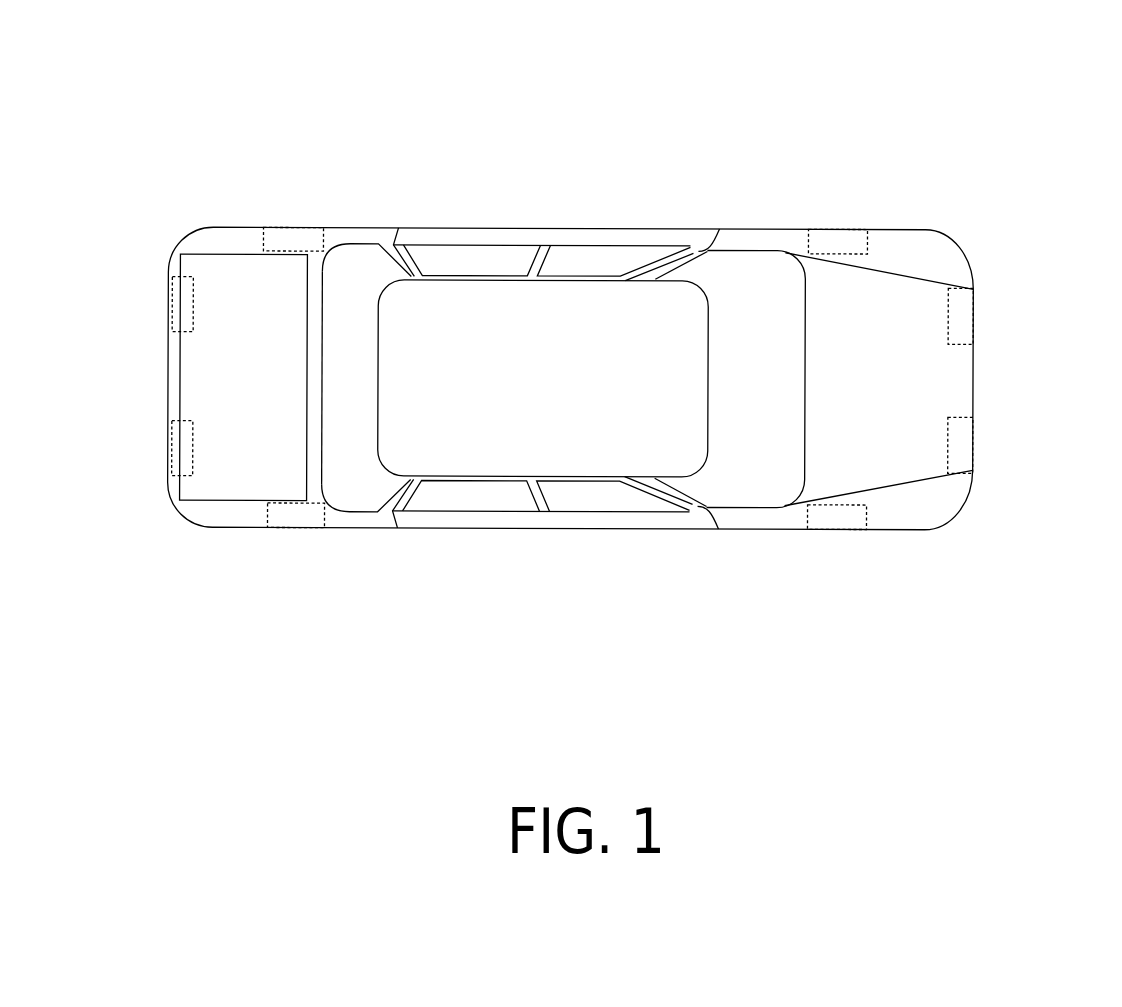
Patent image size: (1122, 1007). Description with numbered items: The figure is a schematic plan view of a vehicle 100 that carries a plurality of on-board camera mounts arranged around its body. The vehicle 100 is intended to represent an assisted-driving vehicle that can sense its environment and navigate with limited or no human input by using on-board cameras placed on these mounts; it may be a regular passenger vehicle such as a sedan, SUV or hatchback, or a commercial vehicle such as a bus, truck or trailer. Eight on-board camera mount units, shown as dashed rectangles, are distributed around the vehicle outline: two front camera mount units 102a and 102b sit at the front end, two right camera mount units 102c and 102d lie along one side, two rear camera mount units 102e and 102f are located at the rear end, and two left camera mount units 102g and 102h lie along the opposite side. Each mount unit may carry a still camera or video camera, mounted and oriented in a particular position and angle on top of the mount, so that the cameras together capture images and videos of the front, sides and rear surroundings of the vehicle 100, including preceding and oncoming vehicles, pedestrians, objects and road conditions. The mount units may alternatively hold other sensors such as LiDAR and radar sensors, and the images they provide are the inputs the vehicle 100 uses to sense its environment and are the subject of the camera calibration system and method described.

The vehicle 100 is at (972, 83).
The front camera mount unit 102a is at (975, 306).
The front camera mount unit 102b is at (975, 440).
The right camera mount unit 102c is at (835, 528).
The right camera mount unit 102d is at (292, 528).
The rear camera mount unit 102e is at (168, 447).
The rear camera mount unit 102f is at (168, 297).
The left camera mount unit 102g is at (287, 228).
The left camera mount unit 102h is at (822, 228).